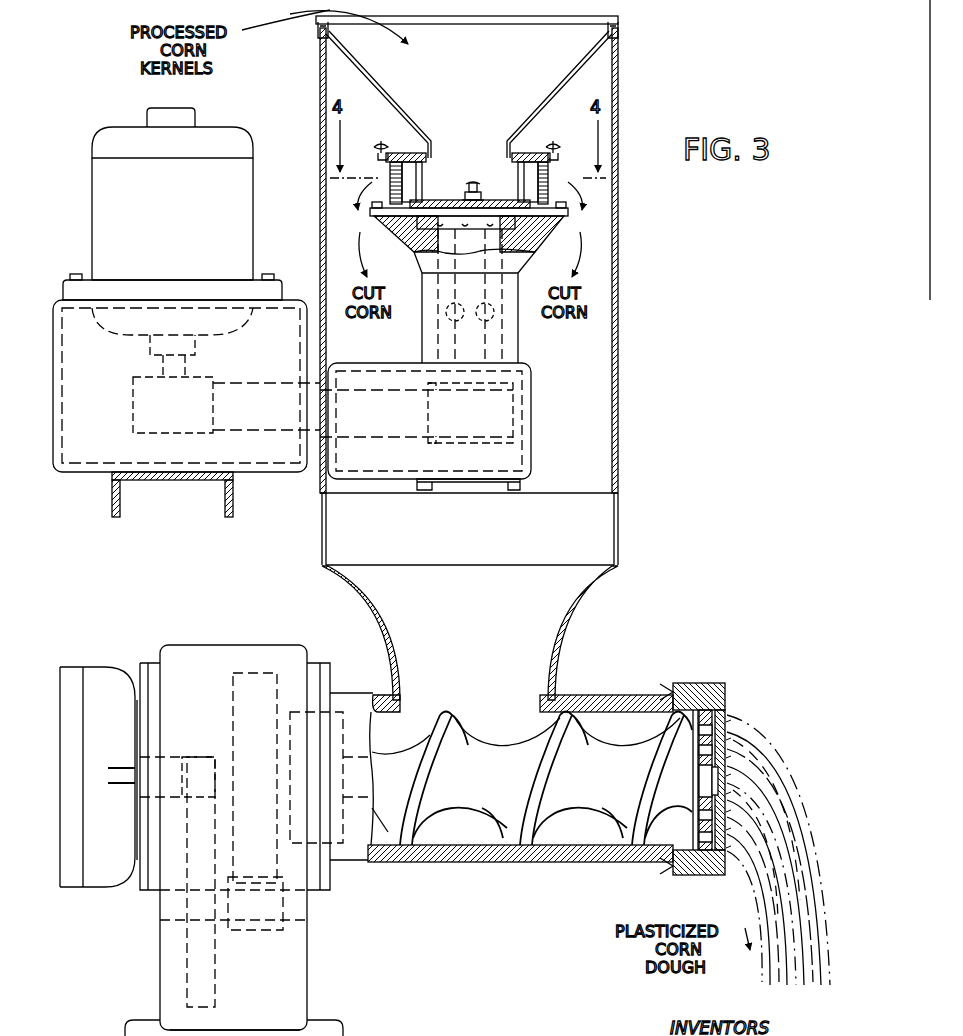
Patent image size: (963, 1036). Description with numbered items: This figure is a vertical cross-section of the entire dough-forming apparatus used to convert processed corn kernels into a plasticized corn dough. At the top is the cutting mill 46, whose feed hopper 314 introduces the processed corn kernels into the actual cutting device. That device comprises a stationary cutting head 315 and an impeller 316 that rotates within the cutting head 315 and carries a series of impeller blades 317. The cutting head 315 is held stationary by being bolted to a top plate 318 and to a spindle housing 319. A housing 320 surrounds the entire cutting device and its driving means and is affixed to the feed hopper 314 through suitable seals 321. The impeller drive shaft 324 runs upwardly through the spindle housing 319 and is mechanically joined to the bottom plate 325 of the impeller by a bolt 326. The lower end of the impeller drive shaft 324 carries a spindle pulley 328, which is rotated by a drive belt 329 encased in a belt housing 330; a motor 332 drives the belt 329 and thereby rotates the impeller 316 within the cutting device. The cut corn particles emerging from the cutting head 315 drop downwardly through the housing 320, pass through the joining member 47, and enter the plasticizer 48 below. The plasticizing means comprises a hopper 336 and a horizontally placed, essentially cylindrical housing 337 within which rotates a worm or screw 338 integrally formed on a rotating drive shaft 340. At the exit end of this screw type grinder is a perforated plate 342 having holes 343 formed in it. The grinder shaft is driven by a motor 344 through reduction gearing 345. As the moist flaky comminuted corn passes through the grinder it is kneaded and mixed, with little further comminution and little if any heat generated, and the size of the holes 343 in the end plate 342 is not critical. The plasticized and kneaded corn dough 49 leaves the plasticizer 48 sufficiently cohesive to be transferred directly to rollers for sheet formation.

The cutting mill 46 is at (627, 106).
The joining member 47 is at (628, 530).
The plasticizer 48 is at (598, 678).
The plasticized and kneaded corn dough 49 is at (764, 776).
The feed hopper 314 is at (592, 73).
The stationary cutting head 315 is at (549, 178).
The impeller 316 is at (480, 172).
The impeller blades 317 is at (520, 178).
The top plate 318 is at (520, 154).
The spindle housing 319 is at (396, 232).
The housing 320 is at (618, 250).
The seals 321 is at (620, 33).
The impeller drive shaft 324 is at (487, 350).
The bottom plate 325 is at (453, 192).
The bolt 326 is at (482, 186).
The spindle pulley 328 is at (478, 444).
The drive belt 329 is at (270, 390).
The belt housing 330 is at (390, 363).
The motor 332 is at (190, 247).
The hopper 336 is at (574, 628).
The cylindrical housing 337 is at (618, 697).
The worm or screw 338 is at (446, 712).
The rotating drive shaft 340 is at (494, 788).
The perforated plate 342 is at (705, 757).
The holes 343 is at (718, 722).
The motor 344 is at (128, 754).
The reduction gearing 345 is at (320, 916).